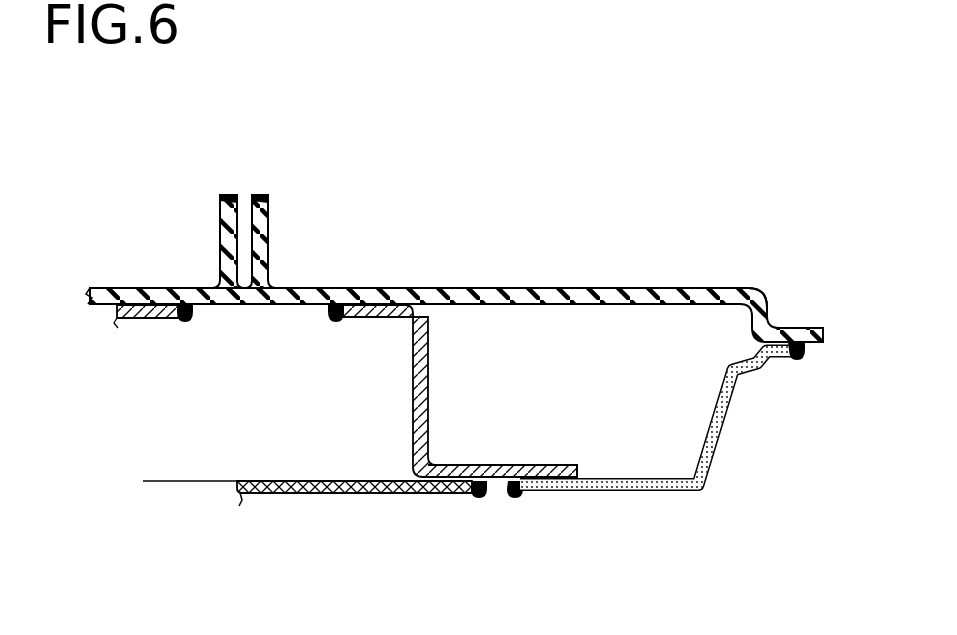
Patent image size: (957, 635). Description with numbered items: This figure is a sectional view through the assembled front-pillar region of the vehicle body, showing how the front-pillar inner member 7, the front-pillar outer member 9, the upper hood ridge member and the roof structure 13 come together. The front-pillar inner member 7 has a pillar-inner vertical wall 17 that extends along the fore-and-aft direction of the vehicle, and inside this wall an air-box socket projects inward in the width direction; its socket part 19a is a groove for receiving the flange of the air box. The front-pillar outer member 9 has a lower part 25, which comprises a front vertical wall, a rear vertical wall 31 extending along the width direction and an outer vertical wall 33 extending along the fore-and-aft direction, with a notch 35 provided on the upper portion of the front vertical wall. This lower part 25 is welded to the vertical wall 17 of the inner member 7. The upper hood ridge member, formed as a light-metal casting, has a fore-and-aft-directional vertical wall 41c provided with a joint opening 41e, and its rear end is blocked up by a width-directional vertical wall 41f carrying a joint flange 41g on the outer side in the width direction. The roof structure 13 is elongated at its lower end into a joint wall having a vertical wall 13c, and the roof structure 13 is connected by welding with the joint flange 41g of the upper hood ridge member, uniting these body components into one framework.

The front-pillar inner member 7 is at (523, 287).
The pillar-inner vertical wall 17 is at (620, 287).
The socket part 19a is at (268, 222).
The fore-and-aft-directional vertical wall 41c is at (120, 320).
The joint opening 41e is at (188, 321).
The width-directional vertical wall 41f is at (413, 378).
The joint flange 41g is at (531, 465).
The roof structure 13 is at (284, 495).
The vertical wall 13c is at (410, 497).
The notch 35 is at (508, 494).
The outer vertical wall 33 is at (665, 494).
The rear vertical wall 31 is at (727, 430).
The lower part 25 is at (706, 489).
The front-pillar outer member 9 is at (666, 462).